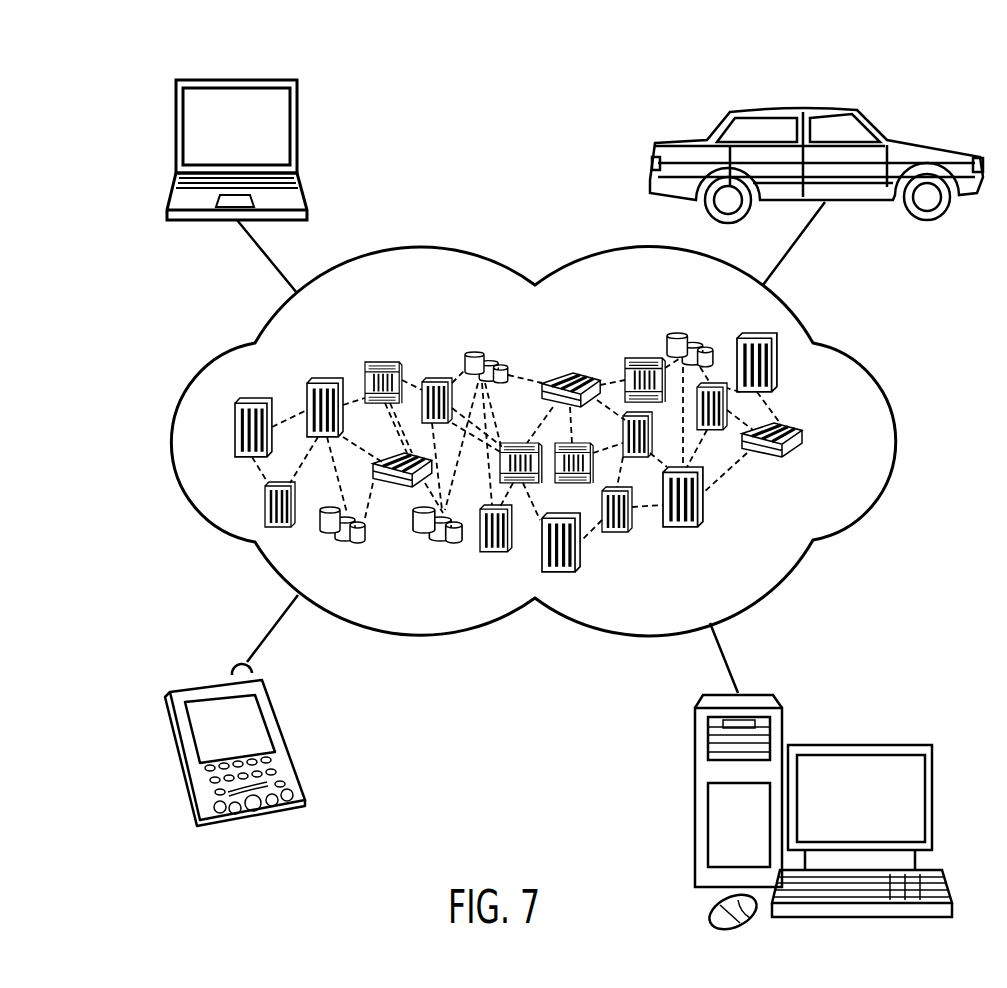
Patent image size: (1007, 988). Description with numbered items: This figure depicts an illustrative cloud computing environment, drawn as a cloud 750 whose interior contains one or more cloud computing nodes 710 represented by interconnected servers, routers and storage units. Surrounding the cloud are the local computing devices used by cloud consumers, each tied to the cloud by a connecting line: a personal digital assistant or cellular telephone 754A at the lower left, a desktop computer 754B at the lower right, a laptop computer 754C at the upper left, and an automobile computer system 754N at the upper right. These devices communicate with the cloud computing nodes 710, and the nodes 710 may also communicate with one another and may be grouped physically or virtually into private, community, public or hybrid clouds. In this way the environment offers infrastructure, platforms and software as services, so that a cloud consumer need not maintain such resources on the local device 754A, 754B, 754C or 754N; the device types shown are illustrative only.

The cloud computing node 710 is at (810, 440).
The network cloud 750 is at (832, 343).
The personal digital assistant or cellular telephone 754A is at (215, 680).
The desktop computer 754B is at (862, 743).
The laptop computer 754C is at (236, 80).
The automobile computer system 754N is at (797, 108).